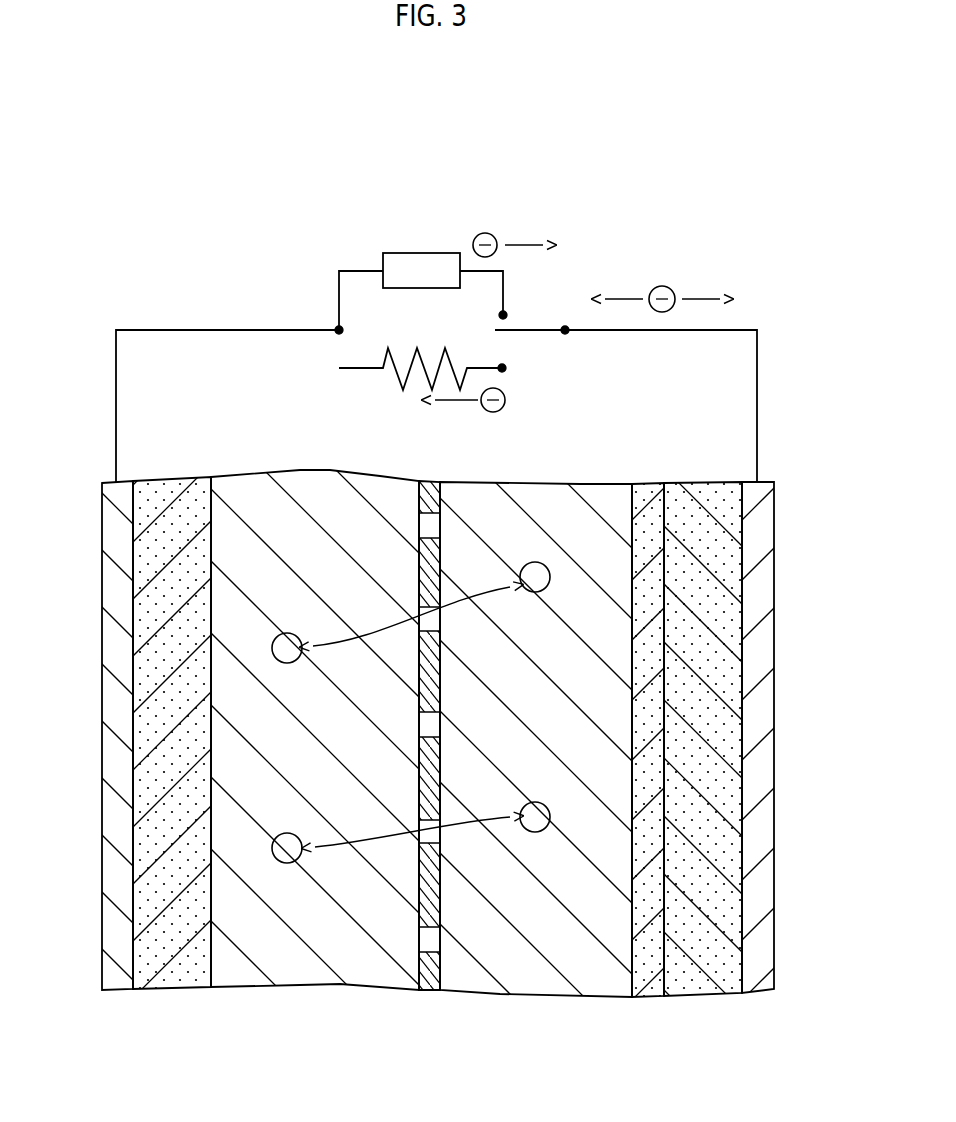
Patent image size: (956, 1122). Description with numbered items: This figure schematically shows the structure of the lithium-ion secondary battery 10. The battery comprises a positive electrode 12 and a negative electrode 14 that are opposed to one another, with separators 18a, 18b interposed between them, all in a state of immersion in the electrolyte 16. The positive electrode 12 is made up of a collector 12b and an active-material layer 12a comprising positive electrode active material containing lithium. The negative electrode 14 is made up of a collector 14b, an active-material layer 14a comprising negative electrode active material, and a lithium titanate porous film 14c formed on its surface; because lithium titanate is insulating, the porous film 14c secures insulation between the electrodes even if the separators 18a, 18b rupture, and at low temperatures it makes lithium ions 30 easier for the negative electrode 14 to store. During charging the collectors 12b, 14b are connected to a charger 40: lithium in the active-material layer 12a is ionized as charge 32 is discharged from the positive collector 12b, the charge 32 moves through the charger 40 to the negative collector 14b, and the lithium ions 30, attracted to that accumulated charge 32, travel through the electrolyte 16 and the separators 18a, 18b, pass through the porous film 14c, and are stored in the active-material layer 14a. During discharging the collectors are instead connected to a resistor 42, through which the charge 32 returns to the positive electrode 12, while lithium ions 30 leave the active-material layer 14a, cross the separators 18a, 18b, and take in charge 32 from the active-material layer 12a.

The lithium-ion secondary battery 10 is at (736, 152).
The positive electrode 12 is at (148, 695).
The active-material layer 12a is at (168, 480).
The collector 12b is at (100, 621).
The negative electrode 14 is at (720, 731).
The active-material layer 14a is at (688, 482).
The collector 14b is at (776, 634).
The lithium titanate porous film 14c is at (632, 514).
The electrolyte 16 is at (338, 947).
The separator 18a is at (489, 759).
The separator 18b is at (440, 970).
The lithium ions 30 is at (292, 663).
The charge 32 is at (490, 232).
The charger 40 is at (445, 253).
The resistor 42 is at (411, 397).